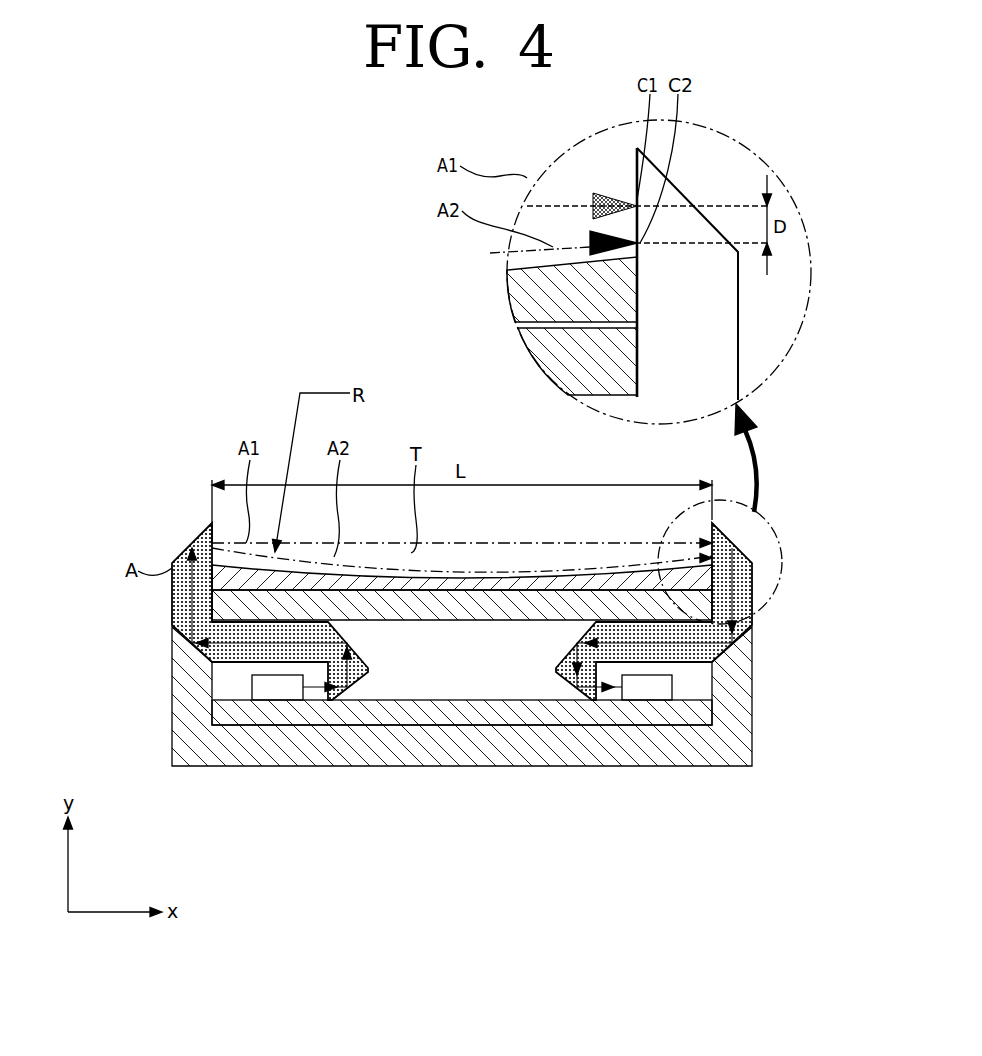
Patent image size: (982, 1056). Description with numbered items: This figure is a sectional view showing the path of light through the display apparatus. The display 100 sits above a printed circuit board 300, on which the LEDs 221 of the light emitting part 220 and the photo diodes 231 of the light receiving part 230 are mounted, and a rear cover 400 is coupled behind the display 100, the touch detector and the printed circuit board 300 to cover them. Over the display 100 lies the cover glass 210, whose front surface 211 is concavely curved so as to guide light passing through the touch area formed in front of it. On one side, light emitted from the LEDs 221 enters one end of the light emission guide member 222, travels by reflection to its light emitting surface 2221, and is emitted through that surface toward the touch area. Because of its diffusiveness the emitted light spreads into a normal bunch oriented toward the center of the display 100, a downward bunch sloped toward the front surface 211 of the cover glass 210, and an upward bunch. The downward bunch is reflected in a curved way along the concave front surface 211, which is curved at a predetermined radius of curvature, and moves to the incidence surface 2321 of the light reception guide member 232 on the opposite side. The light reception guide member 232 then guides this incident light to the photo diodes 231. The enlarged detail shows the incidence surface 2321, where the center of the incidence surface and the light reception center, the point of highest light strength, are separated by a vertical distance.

The display 100 is at (623, 365).
The cover glass 210 is at (518, 580).
The front surface 211 is at (580, 602).
The light emitting part 220 is at (195, 601).
The LEDs 221 is at (245, 684).
The light emission guide member 222 is at (234, 599).
The light emitting surface 2221 is at (212, 523).
The light receiving part 230 is at (678, 411).
The photo diodes 231 is at (662, 689).
The light reception guide member 232 is at (735, 596).
The incidence surface 2321 is at (757, 510).
The printed circuit board 300 is at (413, 713).
The rear cover 400 is at (490, 733).